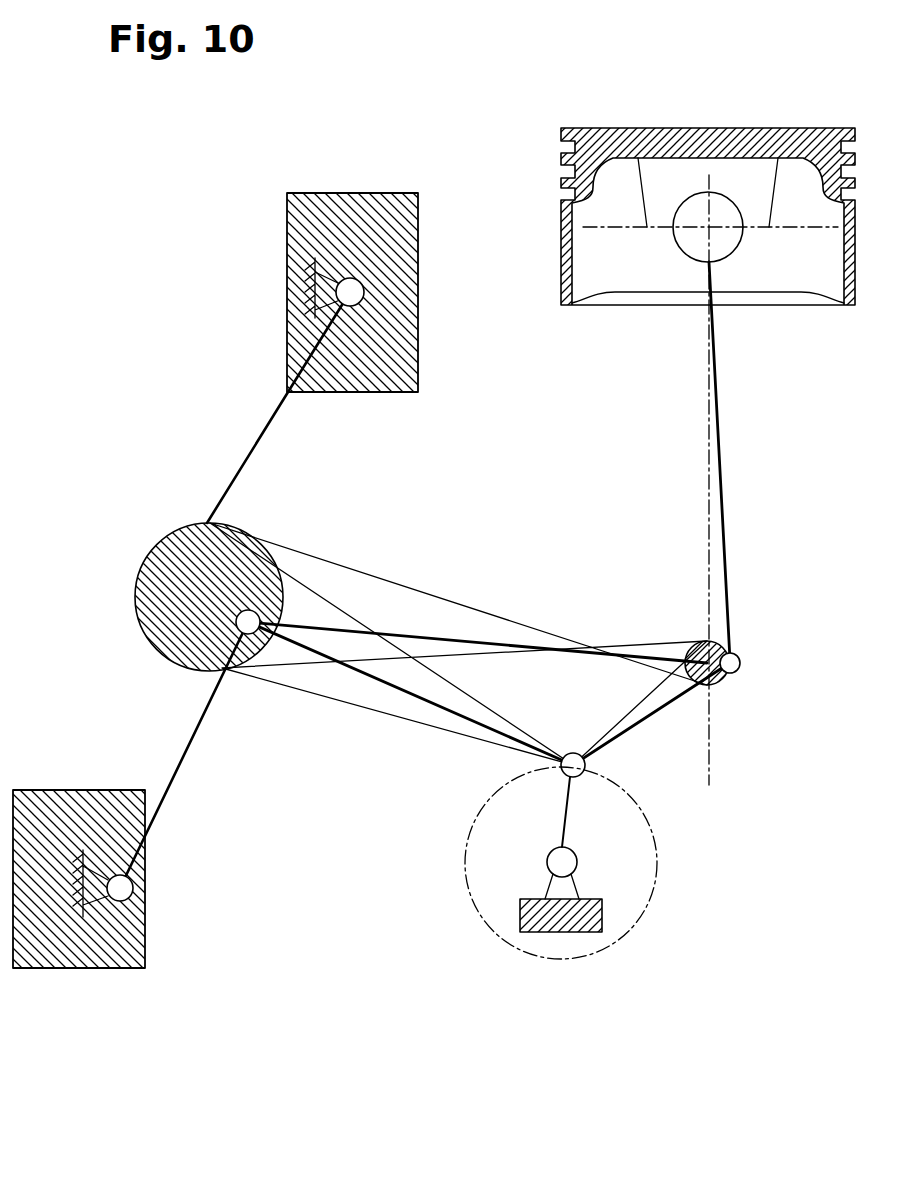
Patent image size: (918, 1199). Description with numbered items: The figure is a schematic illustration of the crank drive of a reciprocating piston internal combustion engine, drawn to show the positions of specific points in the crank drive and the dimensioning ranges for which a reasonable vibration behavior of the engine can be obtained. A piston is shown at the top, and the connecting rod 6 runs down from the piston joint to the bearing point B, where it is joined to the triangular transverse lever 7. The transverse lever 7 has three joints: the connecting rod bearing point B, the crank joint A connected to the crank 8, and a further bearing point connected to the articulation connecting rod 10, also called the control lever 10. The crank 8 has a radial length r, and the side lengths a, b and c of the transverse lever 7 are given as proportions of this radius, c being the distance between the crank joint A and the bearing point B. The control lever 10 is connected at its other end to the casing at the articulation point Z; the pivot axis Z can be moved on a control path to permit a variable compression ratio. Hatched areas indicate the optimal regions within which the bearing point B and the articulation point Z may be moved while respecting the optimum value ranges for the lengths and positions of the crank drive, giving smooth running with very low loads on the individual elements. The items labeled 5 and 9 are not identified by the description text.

The piston with cylinder axis 5 is at (707, 556).
The connecting rod 6 is at (726, 528).
The triangular transverse lever 7 is at (293, 698).
The crank 8 is at (567, 800).
The pivot bearing adjustment region 9 is at (510, 973).
The articulation connecting rod 10 is at (188, 746).
The crank joint A is at (576, 752).
The connecting rod bearing point B is at (741, 662).
The articulation point (pivot axis) of the control lever Z is at (175, 907).